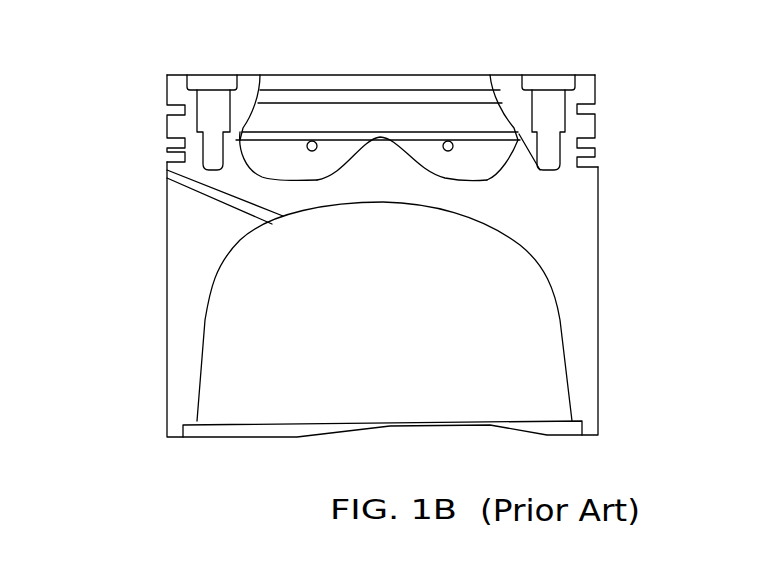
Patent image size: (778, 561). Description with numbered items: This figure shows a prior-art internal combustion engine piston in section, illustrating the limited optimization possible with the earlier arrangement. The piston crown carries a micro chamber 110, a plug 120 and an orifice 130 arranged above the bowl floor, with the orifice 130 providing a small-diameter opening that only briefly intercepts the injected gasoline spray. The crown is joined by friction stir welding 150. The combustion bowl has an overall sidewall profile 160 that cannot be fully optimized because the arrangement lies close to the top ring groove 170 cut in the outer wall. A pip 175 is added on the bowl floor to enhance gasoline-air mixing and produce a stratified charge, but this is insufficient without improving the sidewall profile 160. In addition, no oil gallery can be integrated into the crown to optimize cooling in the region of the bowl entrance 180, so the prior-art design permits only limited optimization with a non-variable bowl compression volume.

The micro chamber 110 is at (210, 143).
The plug 120 is at (208, 109).
The orifice 130 is at (540, 170).
The friction stir welding 150 is at (213, 82).
The overall sidewall profile 160 is at (241, 156).
The top ring groove 170 is at (592, 107).
The pip 175 is at (383, 157).
The bowl entrance 180 is at (495, 75).